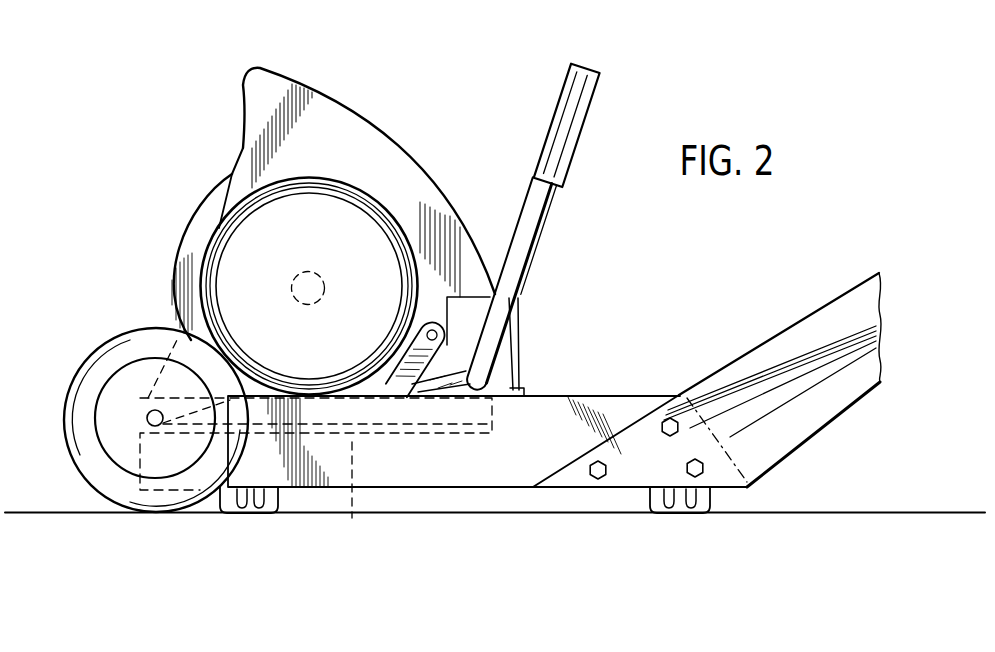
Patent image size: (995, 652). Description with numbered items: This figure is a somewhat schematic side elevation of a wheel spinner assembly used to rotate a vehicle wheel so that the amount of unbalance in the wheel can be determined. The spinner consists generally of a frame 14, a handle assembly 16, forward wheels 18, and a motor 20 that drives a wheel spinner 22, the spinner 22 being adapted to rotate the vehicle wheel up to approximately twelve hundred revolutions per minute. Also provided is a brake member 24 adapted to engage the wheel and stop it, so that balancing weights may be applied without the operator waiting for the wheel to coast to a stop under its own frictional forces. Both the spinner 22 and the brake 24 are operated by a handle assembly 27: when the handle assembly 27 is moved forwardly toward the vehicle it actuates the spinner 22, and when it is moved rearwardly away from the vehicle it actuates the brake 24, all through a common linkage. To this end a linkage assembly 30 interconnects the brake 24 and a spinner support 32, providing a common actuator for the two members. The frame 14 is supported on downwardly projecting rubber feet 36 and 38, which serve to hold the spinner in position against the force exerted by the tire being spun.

The frame 14 is at (292, 480).
The handle assembly 16 is at (808, 333).
The forward wheels 18 is at (123, 352).
The motor 20 is at (345, 232).
The wheel spinner 22 is at (205, 213).
The brake member 24 is at (264, 94).
The handle assembly 27 is at (533, 195).
The linkage assembly 30 is at (420, 396).
The spinner support 32 is at (351, 520).
The rubber foot 36 is at (248, 503).
The rubber foot 38 is at (680, 505).